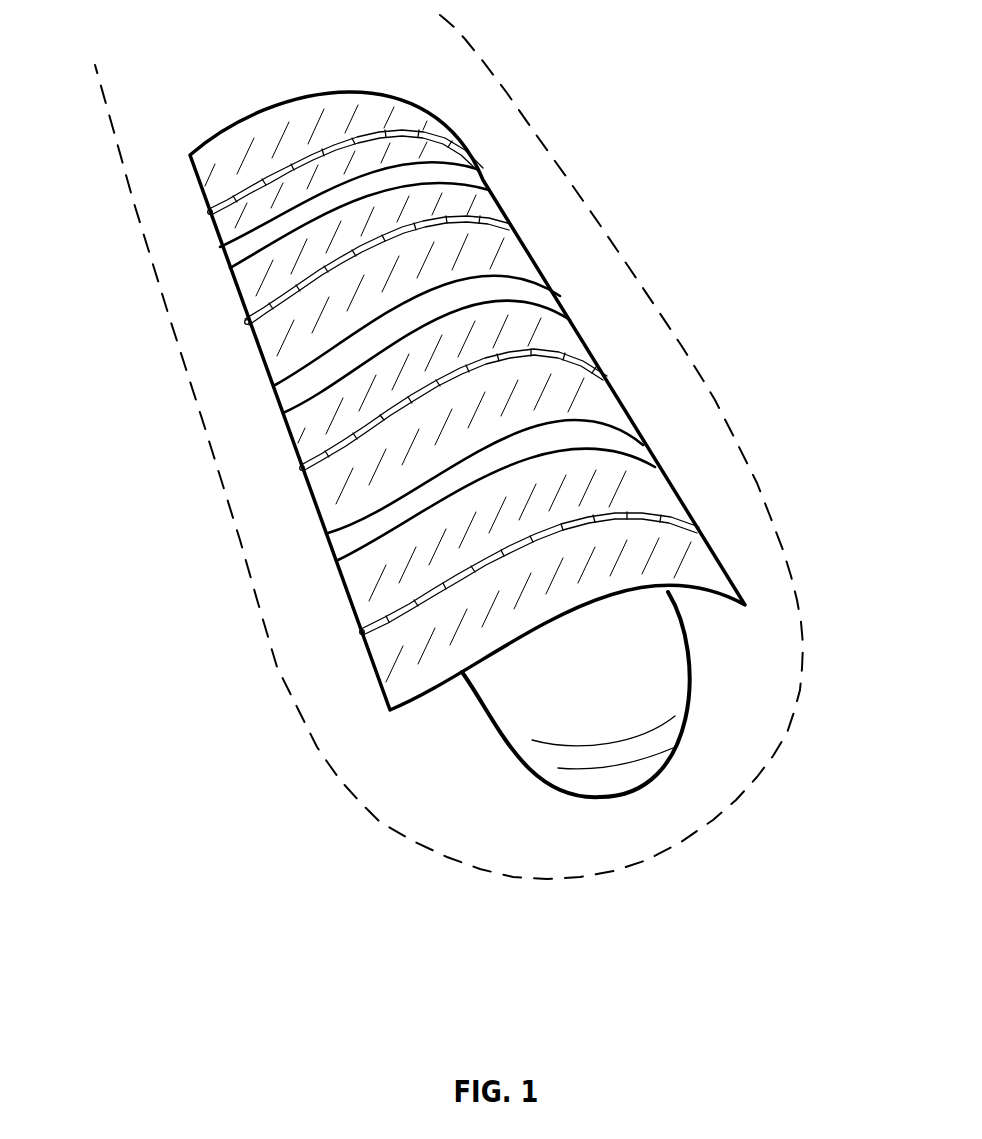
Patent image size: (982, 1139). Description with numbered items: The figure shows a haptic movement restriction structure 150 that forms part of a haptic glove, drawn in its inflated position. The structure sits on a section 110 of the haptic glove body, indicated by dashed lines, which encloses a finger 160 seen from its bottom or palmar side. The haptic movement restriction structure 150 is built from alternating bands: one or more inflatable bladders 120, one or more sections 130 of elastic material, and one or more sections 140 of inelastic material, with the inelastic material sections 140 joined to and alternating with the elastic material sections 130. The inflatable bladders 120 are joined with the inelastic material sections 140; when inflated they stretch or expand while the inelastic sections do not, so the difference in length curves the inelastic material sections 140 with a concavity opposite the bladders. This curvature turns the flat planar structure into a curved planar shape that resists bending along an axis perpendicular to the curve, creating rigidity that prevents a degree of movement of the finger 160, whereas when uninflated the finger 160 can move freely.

The section of haptic glove body 110 is at (584, 155).
The inflatable bladder 120 is at (197, 212).
The section of elastic material 130 is at (271, 398).
The section of inelastic material 140 is at (335, 573).
The haptic movement restriction structure 150 is at (378, 722).
The finger 160 is at (591, 785).